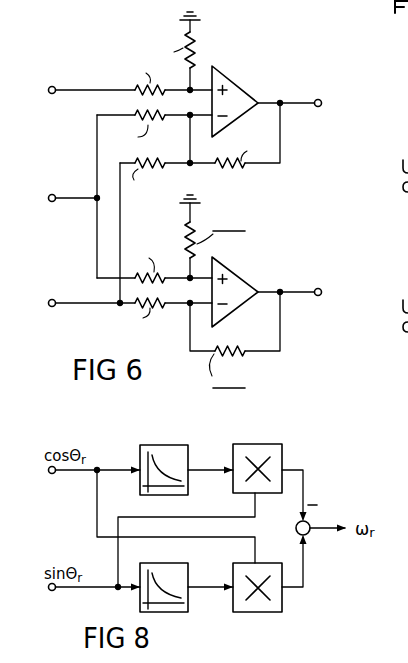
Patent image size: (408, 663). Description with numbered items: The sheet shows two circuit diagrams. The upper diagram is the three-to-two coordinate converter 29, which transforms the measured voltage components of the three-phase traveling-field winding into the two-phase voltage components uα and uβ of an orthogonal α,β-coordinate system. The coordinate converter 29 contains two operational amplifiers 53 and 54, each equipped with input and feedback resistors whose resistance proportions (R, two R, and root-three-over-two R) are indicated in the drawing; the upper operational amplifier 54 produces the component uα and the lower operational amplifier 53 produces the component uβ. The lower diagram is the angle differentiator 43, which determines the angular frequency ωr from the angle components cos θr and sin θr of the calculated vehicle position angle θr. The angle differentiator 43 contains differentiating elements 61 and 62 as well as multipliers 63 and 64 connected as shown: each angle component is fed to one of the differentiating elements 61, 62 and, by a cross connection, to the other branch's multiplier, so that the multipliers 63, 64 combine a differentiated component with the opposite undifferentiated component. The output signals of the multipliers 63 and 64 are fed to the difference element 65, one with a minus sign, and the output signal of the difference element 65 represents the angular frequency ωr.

In FIG. 6, the 3/2-coordinate converter 29 is at (184, 211).
In FIG. 6, the operational amplifier 54 is at (233, 84).
In FIG. 6, the operational amplifier 53 is at (235, 310).
In FIG. 8, the differentiating element 61 is at (188, 447).
In FIG. 8, the differentiating element 62 is at (188, 566).
In FIG. 8, the multiplier 63 is at (282, 447).
In FIG. 8, the multiplier 64 is at (275, 598).
In FIG. 8, the difference element 65 is at (296, 528).
In FIG. 8, the angle differentiator 43 is at (333, 556).